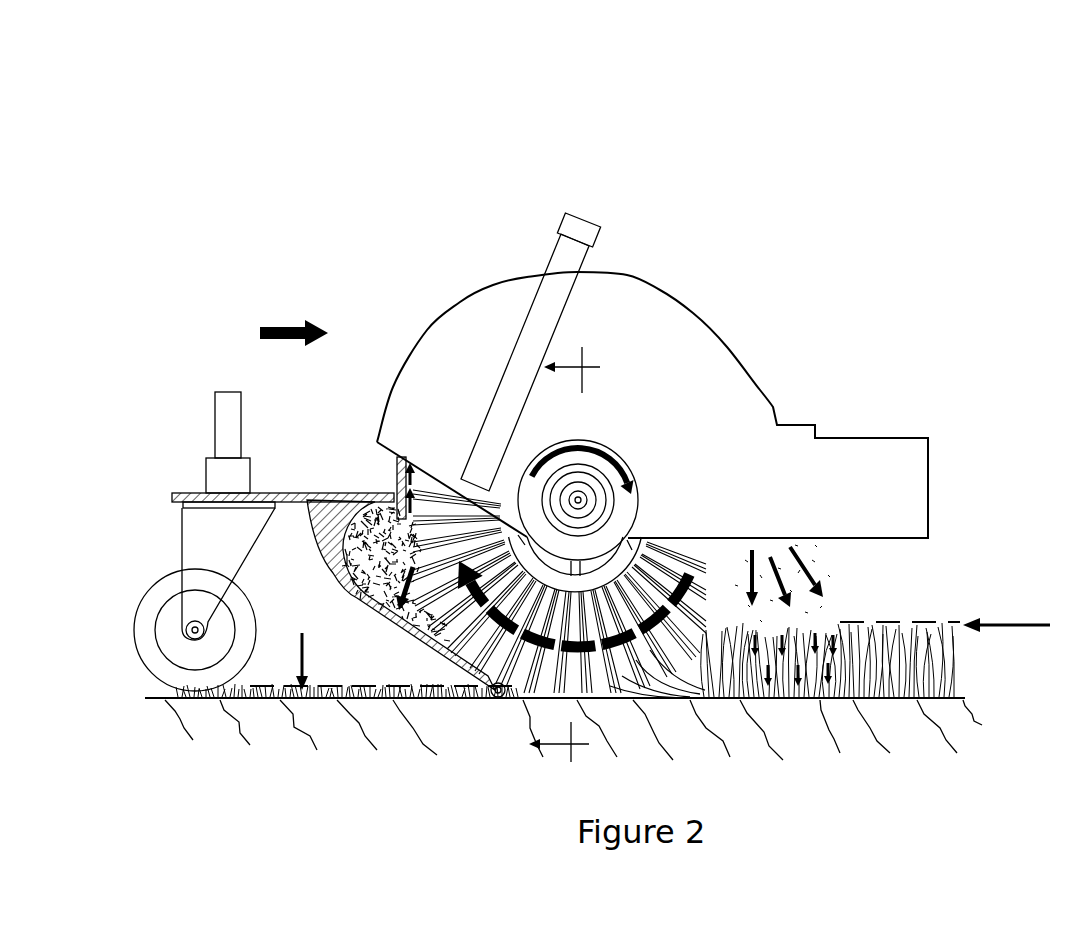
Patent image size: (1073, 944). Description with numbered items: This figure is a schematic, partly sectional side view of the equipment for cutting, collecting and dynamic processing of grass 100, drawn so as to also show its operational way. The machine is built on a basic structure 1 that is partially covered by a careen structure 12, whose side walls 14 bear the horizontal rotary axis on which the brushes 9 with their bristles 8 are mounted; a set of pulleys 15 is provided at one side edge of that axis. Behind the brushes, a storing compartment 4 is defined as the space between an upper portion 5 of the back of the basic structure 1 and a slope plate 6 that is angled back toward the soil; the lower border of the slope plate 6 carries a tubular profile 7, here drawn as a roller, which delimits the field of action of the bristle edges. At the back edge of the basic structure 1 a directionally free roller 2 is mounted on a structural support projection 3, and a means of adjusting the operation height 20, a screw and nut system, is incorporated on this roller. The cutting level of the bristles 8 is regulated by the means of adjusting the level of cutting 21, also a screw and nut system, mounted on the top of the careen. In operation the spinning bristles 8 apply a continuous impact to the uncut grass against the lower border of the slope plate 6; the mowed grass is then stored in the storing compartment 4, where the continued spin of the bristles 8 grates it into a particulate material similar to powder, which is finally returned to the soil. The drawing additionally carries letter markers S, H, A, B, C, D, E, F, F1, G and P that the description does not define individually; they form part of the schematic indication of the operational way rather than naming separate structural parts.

The equipment for cutting, collecting and dynamic processing of grass 100 is at (742, 205).
The basic structure 1 is at (335, 490).
The pair of rollers directionally free 2 is at (155, 503).
The means of adjusting of operation height 20 is at (240, 477).
The structural support projections 3 is at (297, 505).
The upper portion of the back of the basic structure 5 is at (377, 500).
The storing compartment 4 is at (388, 612).
The slope plate 6 is at (455, 603).
The tubular profile 7 is at (501, 697).
The bristles 8 is at (749, 532).
The brushes 9 is at (642, 550).
The careen structure 12 is at (660, 315).
The side walls 14 is at (460, 353).
The set of pulleys 15 is at (607, 450).
The means of adjusting the level of cutting 21 is at (553, 222).
The axis C is at (547, 460).
The edge E is at (407, 530).
The direction of travel S is at (285, 323).
The cut height H is at (307, 638).
The axis marker A is at (569, 558).
The contact point B is at (647, 700).
The airflow F1 is at (830, 700).
The grass G is at (960, 580).
The direction D is at (1017, 623).
The flow F is at (795, 555).
The particles P is at (437, 530).